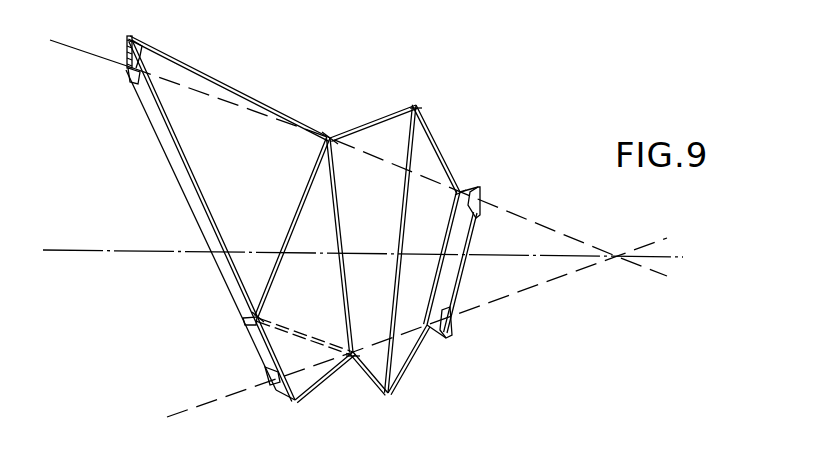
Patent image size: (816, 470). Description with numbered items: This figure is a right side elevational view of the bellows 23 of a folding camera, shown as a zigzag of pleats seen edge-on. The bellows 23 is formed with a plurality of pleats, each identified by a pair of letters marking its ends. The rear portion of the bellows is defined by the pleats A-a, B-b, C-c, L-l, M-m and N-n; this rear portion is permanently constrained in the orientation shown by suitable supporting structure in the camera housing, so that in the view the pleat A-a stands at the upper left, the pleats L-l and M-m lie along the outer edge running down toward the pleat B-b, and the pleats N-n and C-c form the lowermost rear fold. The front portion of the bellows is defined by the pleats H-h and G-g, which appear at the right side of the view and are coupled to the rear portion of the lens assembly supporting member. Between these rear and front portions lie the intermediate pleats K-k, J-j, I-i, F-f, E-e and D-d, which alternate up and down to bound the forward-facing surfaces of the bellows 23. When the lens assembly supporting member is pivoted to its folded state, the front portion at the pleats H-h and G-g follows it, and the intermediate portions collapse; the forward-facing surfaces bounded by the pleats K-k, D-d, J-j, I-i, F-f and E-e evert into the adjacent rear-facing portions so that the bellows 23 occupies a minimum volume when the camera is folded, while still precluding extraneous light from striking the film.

The bellows 23 is at (218, 72).
The pleat A-a is at (136, 12).
The pleat L-l is at (132, 78).
The pleat K-k is at (330, 136).
The pleat J-j is at (416, 104).
The pleat I-i is at (460, 190).
The pleat H-h is at (480, 188).
The pleat G-g is at (450, 334).
The pleat F-f is at (428, 328).
The pleat E-e is at (390, 394).
The pleat D-d is at (353, 356).
The pleat C-c is at (294, 402).
The pleat B-b is at (264, 318).
The pleat M-m is at (243, 320).
The pleat N-n is at (265, 370).